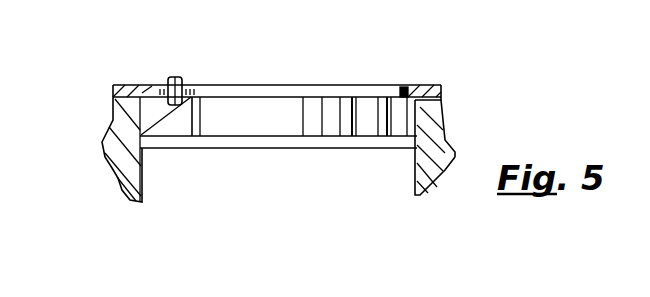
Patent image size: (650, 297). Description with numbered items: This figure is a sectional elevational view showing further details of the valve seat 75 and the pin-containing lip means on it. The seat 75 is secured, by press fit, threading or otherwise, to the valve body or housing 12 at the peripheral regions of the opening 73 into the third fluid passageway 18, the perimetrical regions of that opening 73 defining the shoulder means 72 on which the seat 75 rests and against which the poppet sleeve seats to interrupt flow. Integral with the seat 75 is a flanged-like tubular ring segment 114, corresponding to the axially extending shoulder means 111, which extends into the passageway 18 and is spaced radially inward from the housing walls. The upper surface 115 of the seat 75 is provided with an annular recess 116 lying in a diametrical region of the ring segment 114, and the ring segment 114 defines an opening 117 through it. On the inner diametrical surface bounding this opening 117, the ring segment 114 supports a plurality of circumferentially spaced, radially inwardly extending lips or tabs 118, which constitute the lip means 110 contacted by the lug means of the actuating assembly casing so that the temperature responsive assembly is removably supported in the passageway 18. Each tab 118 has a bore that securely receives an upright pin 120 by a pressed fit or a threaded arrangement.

The valve body or housing 12 is at (112, 150).
The third fluid passageway 18 is at (152, 199).
The shoulder means 72 is at (435, 100).
The opening 73 is at (416, 163).
The valve seat 75 is at (442, 86).
The lip means 110 is at (203, 117).
The axially extending shoulder means 111 is at (166, 121).
The flanged-like tubular ring segment 114 is at (399, 99).
The upper surface 115 is at (430, 84).
The annular recess 116 is at (403, 87).
The opening 117 is at (287, 113).
The lips or tabs 118 is at (190, 118).
The upright pin 120 is at (172, 76).